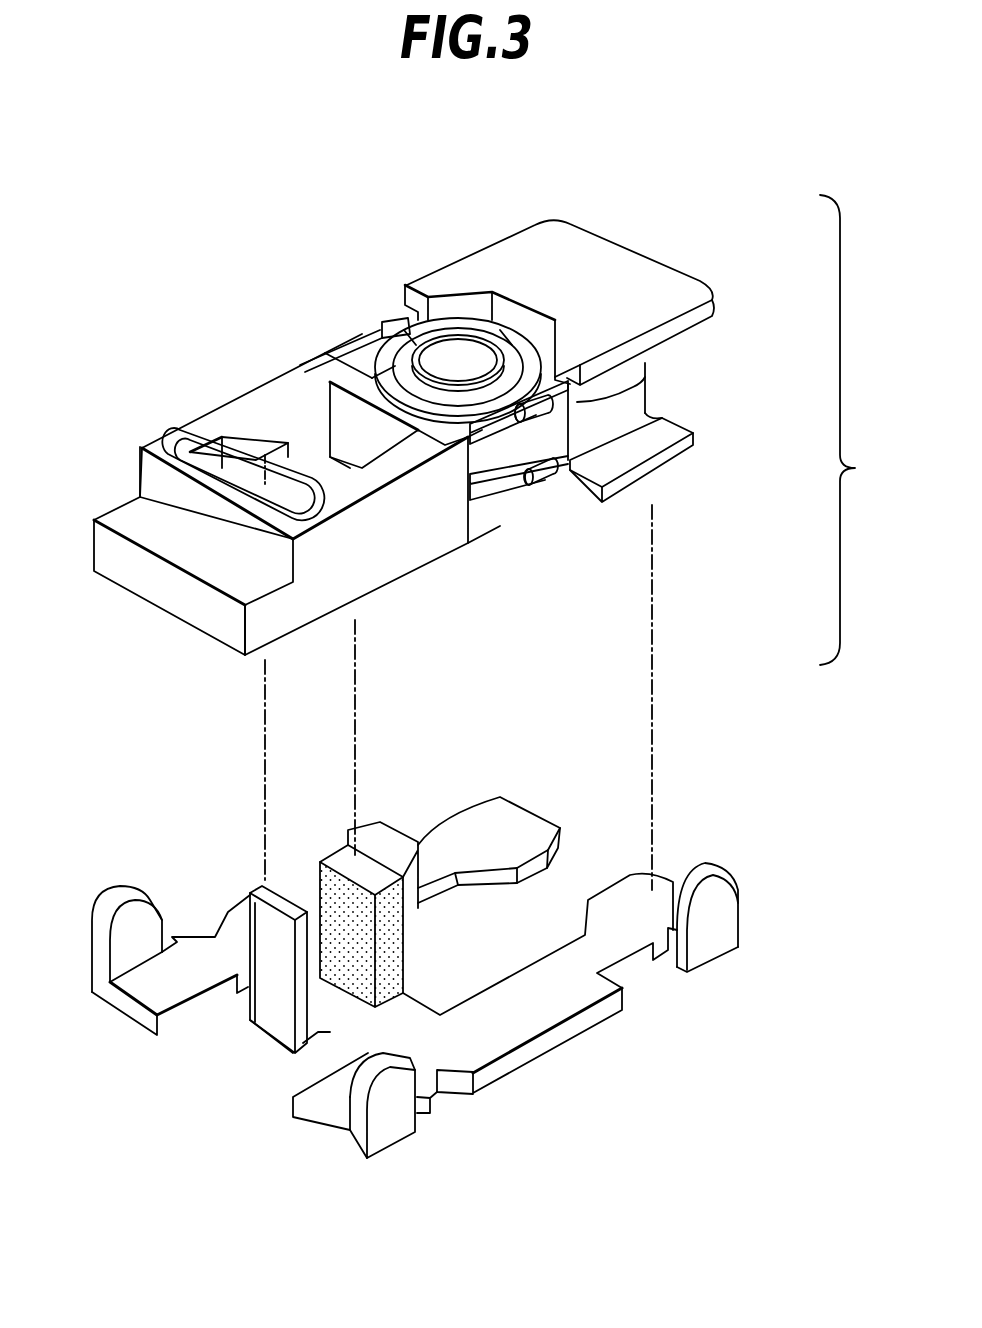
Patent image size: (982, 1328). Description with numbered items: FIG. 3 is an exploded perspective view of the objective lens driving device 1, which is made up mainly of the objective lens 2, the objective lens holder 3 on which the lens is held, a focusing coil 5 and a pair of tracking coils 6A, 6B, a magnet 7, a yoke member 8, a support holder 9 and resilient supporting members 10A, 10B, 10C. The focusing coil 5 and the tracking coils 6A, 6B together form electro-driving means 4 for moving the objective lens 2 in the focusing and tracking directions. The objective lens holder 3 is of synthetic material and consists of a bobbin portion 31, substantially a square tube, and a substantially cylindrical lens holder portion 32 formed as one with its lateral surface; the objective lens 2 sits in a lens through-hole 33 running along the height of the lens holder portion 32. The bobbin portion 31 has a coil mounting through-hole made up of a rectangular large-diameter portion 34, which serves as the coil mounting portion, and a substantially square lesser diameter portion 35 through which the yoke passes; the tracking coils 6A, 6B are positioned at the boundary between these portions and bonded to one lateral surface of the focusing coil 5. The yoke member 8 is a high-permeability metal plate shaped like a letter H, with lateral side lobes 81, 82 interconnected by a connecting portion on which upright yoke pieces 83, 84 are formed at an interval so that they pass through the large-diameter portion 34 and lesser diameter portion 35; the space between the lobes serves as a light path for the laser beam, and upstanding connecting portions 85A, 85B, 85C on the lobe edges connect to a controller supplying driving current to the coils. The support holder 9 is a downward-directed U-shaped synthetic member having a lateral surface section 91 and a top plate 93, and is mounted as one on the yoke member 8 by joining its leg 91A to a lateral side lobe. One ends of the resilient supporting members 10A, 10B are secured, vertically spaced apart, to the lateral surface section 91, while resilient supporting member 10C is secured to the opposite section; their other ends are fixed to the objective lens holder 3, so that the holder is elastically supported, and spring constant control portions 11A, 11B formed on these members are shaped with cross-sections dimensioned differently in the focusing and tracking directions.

The objective lens driving device 1 is at (867, 489).
The objective lens 2 is at (460, 355).
The objective lens holder 3 is at (455, 665).
The electro-driving means 4 is at (183, 791).
The focusing coil 5 is at (190, 430).
The tracking coil 6A is at (227, 427).
The tracking coil 6B is at (350, 490).
The magnet 7 is at (338, 855).
The yoke member 8 is at (548, 1078).
The support holder 9 is at (625, 265).
The resilient supporting member 10A is at (642, 398).
The resilient supporting member 10B is at (623, 430).
The resilient supporting member 10C is at (367, 343).
The spring constant control portion 11A is at (556, 466).
The spring constant control portion 11B is at (548, 430).
The bobbin portion 31 is at (415, 548).
The lens holder portion 32 is at (503, 447).
The lens through-hole 33 is at (418, 332).
The large-diameter portion 34 is at (160, 433).
The lesser diameter portion 35 is at (297, 430).
The lateral side lobe 81 is at (585, 1003).
The lateral side lobe 82 is at (465, 822).
The yoke piece 83 is at (255, 893).
The yoke piece 84 is at (385, 830).
The upstanding connecting portion 85A is at (388, 1115).
The upstanding connecting portion 85B is at (102, 950).
The upstanding connecting portion 85C is at (718, 910).
The lateral surface section 91 is at (632, 400).
The leg 91A is at (647, 467).
The top plate 93 is at (572, 255).